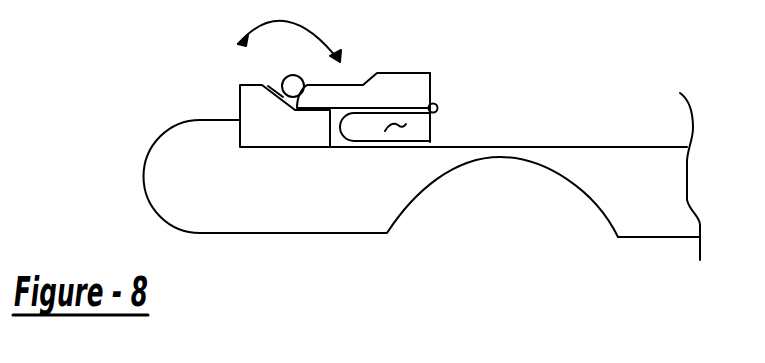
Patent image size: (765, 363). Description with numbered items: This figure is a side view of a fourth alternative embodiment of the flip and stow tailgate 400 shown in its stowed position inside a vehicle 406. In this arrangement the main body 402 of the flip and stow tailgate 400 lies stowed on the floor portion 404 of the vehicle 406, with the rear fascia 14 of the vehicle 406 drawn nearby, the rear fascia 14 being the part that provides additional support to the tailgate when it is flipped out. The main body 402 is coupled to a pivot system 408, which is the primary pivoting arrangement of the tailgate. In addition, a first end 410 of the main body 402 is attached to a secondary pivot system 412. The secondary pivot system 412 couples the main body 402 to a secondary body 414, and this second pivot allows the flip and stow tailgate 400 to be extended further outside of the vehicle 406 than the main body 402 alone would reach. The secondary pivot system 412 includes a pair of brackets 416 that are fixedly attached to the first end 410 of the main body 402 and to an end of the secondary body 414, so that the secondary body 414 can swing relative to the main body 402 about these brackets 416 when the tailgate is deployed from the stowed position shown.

The rear fascia 14 is at (160, 170).
The flip and stow tailgate 400 is at (376, 56).
The main body 402 is at (405, 93).
The floor portion 404 is at (637, 148).
The vehicle 406 is at (648, 218).
The pivot system 408 is at (285, 76).
The first end 410 is at (447, 101).
The secondary pivot system 412 is at (452, 96).
The secondary body 414 is at (400, 126).
The pair of brackets 416 is at (437, 111).